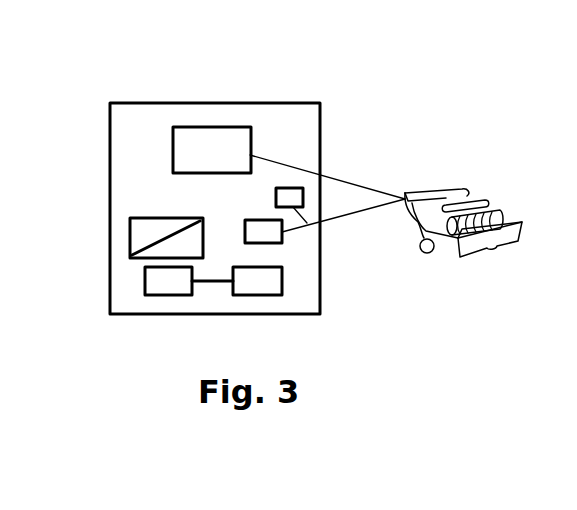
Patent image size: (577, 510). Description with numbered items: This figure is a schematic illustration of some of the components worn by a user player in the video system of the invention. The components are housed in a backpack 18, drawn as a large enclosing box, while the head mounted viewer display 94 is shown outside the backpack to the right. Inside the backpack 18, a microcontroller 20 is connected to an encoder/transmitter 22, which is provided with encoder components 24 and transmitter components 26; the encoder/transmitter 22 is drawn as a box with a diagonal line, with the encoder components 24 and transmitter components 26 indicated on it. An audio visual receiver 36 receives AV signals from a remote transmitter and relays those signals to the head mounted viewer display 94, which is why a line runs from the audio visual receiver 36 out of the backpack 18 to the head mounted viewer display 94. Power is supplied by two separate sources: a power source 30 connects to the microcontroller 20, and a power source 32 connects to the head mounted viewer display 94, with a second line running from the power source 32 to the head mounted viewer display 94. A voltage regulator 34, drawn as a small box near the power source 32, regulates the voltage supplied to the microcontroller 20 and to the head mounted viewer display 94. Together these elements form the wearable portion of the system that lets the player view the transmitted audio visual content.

The backpack 18 is at (249, 102).
The microcontroller 20 is at (162, 292).
The encoder/transmitter 22 is at (128, 241).
The encoder components 24 is at (199, 230).
The transmitter components 26 is at (162, 218).
The power source 30 is at (282, 278).
The power source 32 is at (268, 240).
The voltage regulator 34 is at (303, 198).
The audio visual receiver 36 is at (237, 138).
The head mounted viewer display 94 is at (480, 197).